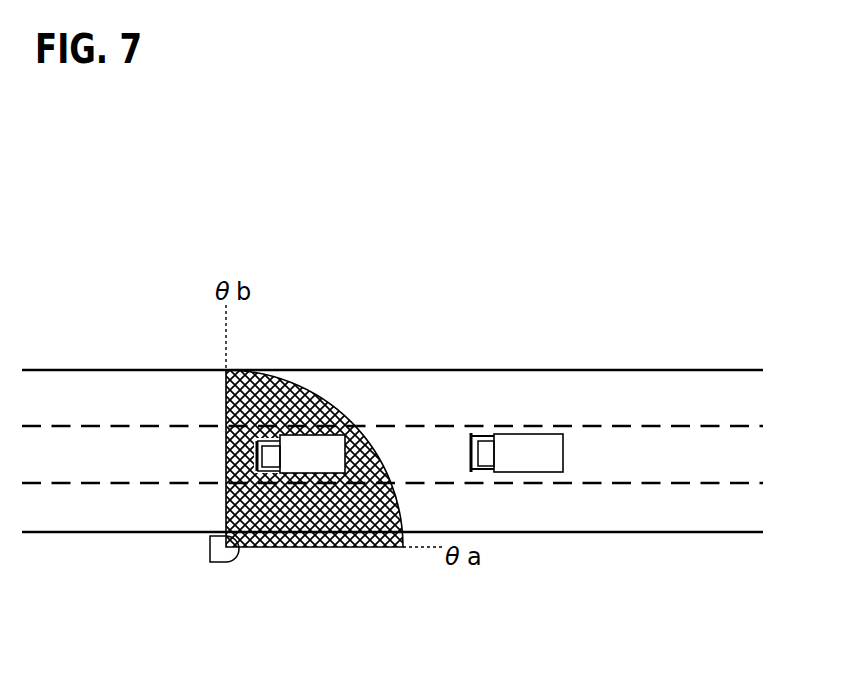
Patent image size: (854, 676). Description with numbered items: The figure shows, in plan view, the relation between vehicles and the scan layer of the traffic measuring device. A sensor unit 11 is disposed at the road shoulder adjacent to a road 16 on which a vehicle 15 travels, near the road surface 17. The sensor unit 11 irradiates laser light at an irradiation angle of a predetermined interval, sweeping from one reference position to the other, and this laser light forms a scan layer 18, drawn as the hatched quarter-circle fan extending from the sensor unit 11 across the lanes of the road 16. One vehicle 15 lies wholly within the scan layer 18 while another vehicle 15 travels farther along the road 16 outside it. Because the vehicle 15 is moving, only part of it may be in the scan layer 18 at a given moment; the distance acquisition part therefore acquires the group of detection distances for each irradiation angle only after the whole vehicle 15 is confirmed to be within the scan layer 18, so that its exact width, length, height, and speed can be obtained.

The sensor unit 11 is at (220, 562).
The vehicle 15 is at (320, 443).
The road 16 is at (432, 367).
The road surface 17 is at (689, 392).
The scan layer 18 is at (298, 387).